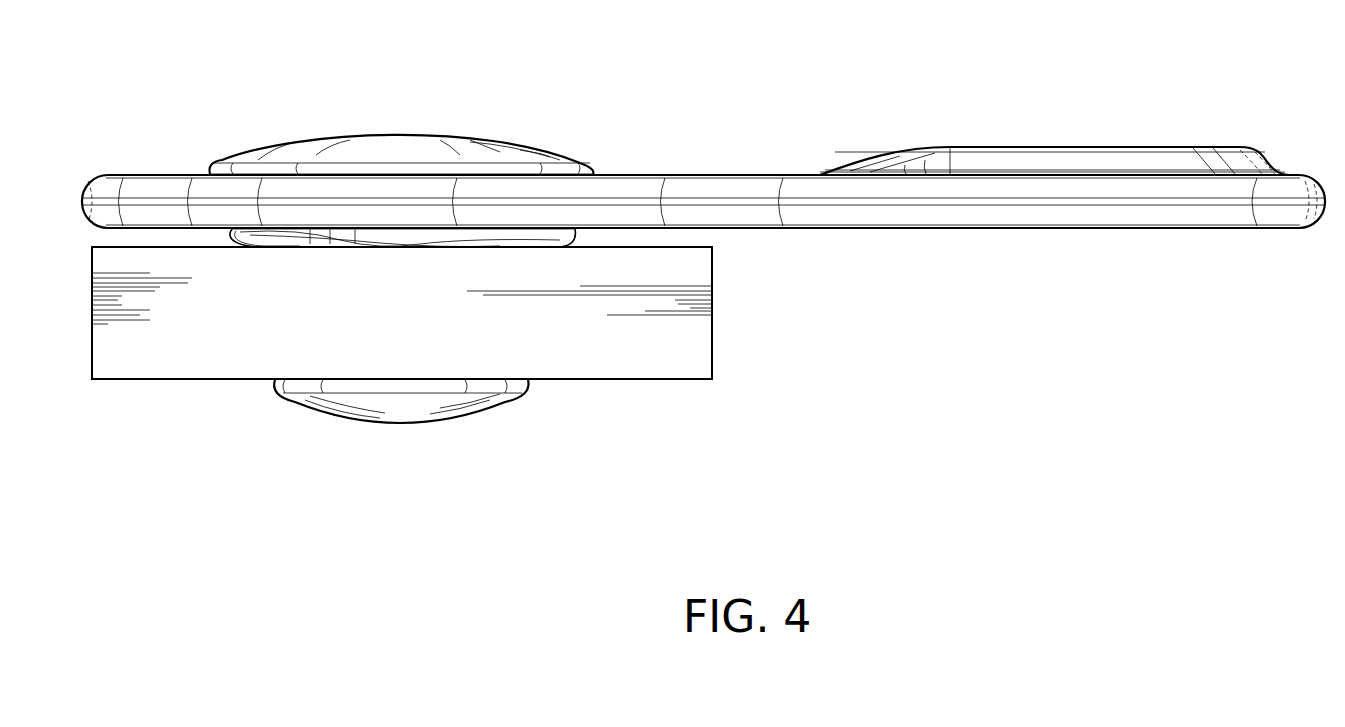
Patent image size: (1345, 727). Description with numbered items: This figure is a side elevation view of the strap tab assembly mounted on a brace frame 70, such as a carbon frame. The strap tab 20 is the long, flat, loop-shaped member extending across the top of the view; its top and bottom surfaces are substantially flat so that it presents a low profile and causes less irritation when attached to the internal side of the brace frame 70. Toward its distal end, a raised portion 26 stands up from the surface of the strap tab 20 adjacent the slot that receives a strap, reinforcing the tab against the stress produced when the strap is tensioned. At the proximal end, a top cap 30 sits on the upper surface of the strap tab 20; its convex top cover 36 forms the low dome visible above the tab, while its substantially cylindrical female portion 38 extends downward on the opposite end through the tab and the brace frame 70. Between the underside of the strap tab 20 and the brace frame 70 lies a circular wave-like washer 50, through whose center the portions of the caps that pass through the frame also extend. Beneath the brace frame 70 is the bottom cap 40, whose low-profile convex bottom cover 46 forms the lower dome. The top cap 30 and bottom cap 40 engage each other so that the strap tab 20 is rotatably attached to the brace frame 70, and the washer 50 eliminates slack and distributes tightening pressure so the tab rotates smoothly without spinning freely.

The strap tab 20 is at (730, 188).
The raised portion 26 is at (1120, 157).
The top cap 30 is at (497, 135).
The convex top cover 36 is at (397, 148).
The female portion 38 is at (356, 232).
The bottom cap 40 is at (353, 419).
The convex bottom cover 46 is at (413, 408).
The washer 50 is at (252, 232).
The brace frame 70 is at (681, 339).